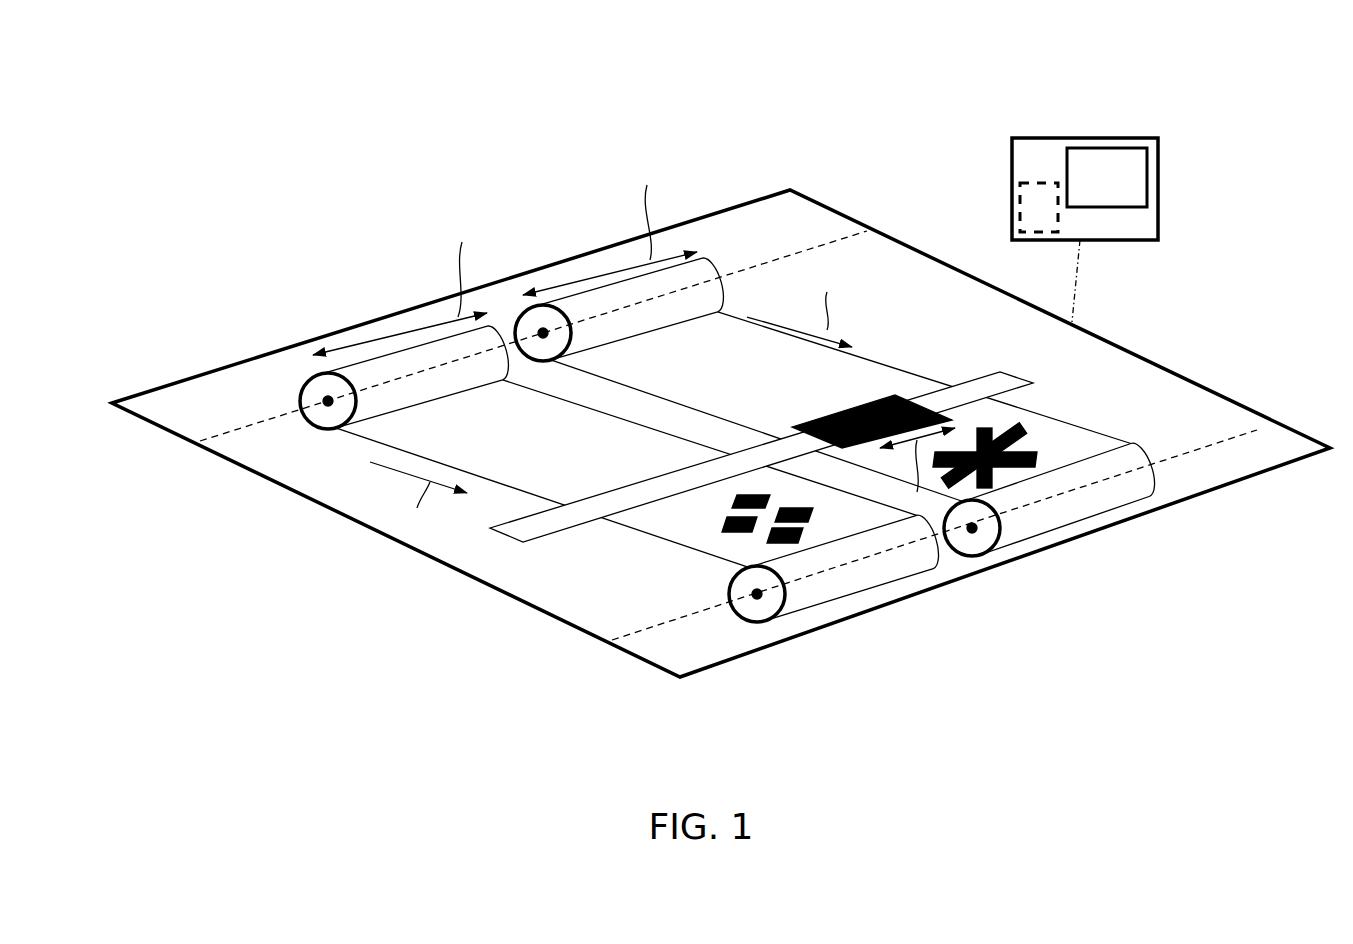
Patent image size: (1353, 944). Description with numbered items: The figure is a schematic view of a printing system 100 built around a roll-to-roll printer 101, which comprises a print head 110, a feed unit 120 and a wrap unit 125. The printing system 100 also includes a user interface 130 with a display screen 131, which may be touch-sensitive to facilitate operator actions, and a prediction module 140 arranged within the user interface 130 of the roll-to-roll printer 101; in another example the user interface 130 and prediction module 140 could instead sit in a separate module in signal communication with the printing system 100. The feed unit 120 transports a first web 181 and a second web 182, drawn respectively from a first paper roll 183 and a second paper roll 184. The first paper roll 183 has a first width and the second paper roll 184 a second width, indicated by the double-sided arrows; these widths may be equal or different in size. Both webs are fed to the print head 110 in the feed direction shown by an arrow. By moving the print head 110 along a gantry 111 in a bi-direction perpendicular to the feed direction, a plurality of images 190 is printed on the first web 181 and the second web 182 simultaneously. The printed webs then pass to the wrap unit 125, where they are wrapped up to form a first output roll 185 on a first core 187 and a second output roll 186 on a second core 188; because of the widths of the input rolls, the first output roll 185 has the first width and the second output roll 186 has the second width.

The printing system 100 is at (721, 387).
The roll-to-roll printer 101 is at (1230, 397).
The print head 110 is at (810, 418).
The gantry 111 is at (1027, 387).
The feed unit 120 is at (280, 413).
The wrap unit 125 is at (640, 627).
The user interface 130 is at (1022, 138).
The display screen 131 is at (1123, 180).
The prediction module 140 is at (1012, 213).
The first web 181 is at (583, 452).
The second web 182 is at (668, 367).
The first paper roll 183 is at (395, 353).
The second paper roll 184 is at (592, 283).
The first output roll 185 is at (870, 587).
The second output roll 186 is at (1067, 537).
The first core 187 is at (760, 600).
The second core 188 is at (977, 533).
The images 190 is at (733, 500).